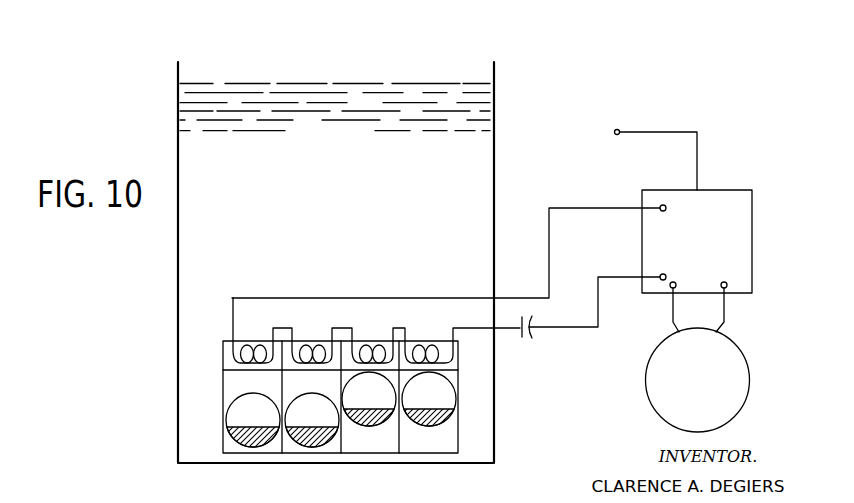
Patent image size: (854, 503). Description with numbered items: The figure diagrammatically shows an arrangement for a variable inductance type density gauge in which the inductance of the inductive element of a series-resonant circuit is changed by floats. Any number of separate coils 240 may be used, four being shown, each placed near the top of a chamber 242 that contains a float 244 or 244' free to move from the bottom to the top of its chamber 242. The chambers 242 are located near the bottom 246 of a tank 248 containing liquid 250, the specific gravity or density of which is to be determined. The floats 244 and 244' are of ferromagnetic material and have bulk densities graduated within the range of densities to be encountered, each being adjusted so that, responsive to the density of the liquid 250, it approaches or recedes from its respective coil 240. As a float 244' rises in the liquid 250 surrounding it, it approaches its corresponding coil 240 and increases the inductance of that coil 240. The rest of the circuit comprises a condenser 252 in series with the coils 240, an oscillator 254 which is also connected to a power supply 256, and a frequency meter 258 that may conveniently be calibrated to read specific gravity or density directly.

The coil 240 is at (247, 346).
The chamber 242 is at (341, 411).
The float 244 is at (282, 464).
The float 244' is at (399, 455).
The bottom of tank 246 is at (447, 465).
The tank 248 is at (180, 281).
The liquid 250 is at (355, 110).
The condenser 252 is at (526, 340).
The oscillator 254 is at (648, 257).
The power supply 256 is at (620, 127).
The frequency meter 258 is at (663, 403).